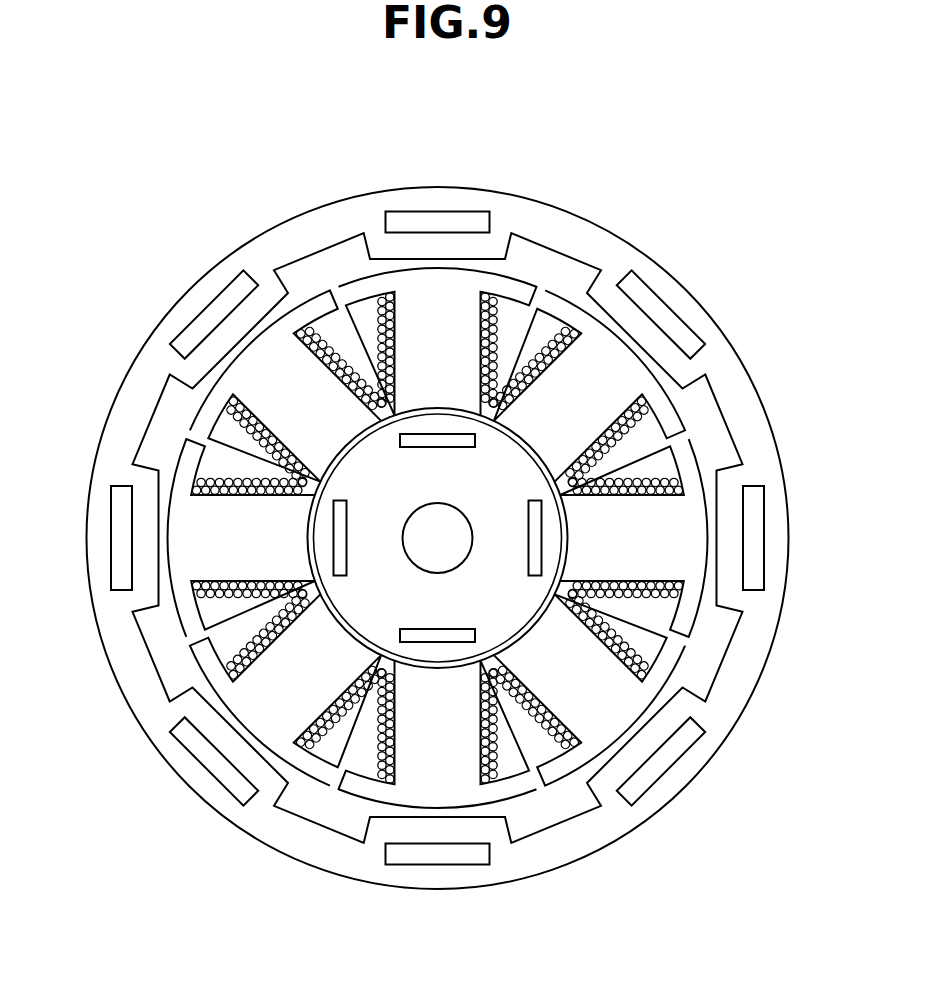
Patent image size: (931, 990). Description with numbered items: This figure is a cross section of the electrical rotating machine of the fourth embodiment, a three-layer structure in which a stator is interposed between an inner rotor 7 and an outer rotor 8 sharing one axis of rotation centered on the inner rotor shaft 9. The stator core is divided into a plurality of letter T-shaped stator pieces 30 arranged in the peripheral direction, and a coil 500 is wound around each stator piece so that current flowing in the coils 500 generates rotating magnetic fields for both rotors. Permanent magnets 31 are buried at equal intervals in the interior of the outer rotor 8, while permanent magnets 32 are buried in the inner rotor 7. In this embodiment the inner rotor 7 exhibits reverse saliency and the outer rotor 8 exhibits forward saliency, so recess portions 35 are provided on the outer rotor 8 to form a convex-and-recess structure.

The inner rotor 7 is at (513, 540).
The outer rotor 8 is at (538, 232).
The inner rotor shaft 9 is at (418, 539).
The stator pieces 30 is at (597, 356).
The magnets 31 is at (437, 223).
The magnets 32 is at (428, 440).
The recess portion 35 is at (578, 268).
The coils 500 is at (325, 333).